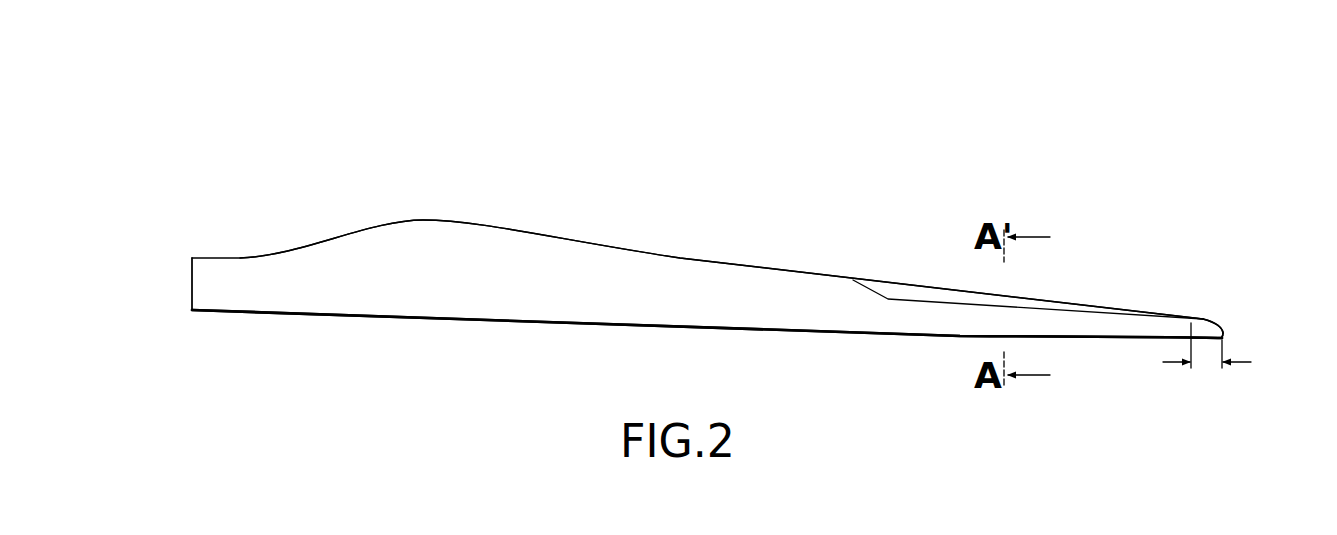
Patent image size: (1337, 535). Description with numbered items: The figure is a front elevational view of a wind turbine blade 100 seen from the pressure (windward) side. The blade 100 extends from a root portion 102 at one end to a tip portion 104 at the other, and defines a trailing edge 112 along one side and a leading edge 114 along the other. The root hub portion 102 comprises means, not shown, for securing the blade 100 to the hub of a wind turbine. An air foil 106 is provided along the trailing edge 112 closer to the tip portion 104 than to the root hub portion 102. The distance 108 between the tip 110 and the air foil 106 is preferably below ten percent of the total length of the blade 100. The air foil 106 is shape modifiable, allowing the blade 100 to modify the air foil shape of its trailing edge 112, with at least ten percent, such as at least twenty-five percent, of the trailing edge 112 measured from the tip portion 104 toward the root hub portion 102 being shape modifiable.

The wind turbine blade 100 is at (705, 160).
The root portion 102 is at (203, 270).
The tip portion 104 is at (1208, 331).
The air foil 106 is at (1097, 307).
The distance 108 is at (1202, 365).
The tip 110 is at (1225, 334).
The trailing edge 112 is at (746, 263).
The leading edge 114 is at (527, 324).